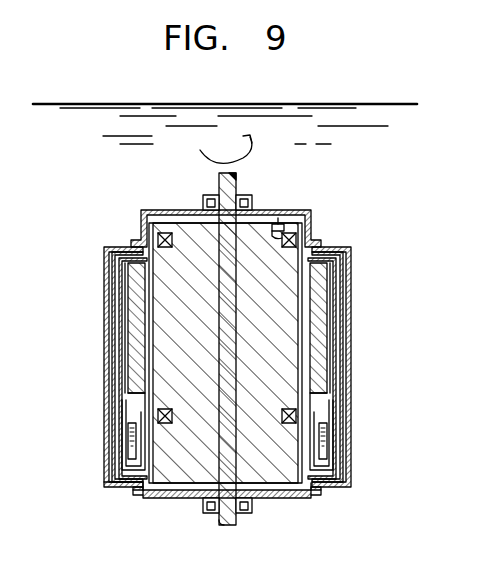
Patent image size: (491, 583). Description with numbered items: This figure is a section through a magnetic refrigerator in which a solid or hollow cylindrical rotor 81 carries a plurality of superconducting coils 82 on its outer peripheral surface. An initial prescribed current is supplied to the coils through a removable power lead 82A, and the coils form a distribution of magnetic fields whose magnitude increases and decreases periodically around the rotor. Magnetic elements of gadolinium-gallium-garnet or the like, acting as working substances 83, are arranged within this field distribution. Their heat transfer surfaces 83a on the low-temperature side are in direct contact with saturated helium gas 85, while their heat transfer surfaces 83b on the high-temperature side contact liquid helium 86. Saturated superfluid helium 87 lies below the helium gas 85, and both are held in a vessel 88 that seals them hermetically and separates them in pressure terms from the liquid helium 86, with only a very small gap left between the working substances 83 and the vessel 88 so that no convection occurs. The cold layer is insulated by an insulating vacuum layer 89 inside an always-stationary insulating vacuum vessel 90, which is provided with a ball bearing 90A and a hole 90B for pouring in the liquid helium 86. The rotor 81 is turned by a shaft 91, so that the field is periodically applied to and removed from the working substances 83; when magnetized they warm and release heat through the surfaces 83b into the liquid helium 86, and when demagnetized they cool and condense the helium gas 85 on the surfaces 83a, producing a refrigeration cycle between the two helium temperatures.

The rotor 81 is at (293, 307).
The superconducting coils 82 is at (300, 238).
The removable power lead 82A is at (283, 220).
The working substances 83 is at (128, 308).
The heat transfer surfaces on the low-temperature side 83a is at (120, 267).
The heat transfer surfaces on the high-temperature side 83b is at (123, 284).
The saturated helium gas 85 is at (123, 407).
The liquid helium 86 is at (96, 195).
The saturated superfluid helium 87 is at (123, 450).
The vessel 88 is at (120, 345).
The insulating vacuum layer 89 is at (112, 474).
The insulating vacuum vessel 90 is at (103, 374).
The ball bearing 90A is at (203, 198).
The hole for pouring in the liquid helium 90B is at (273, 500).
The shaft 91 is at (238, 190).